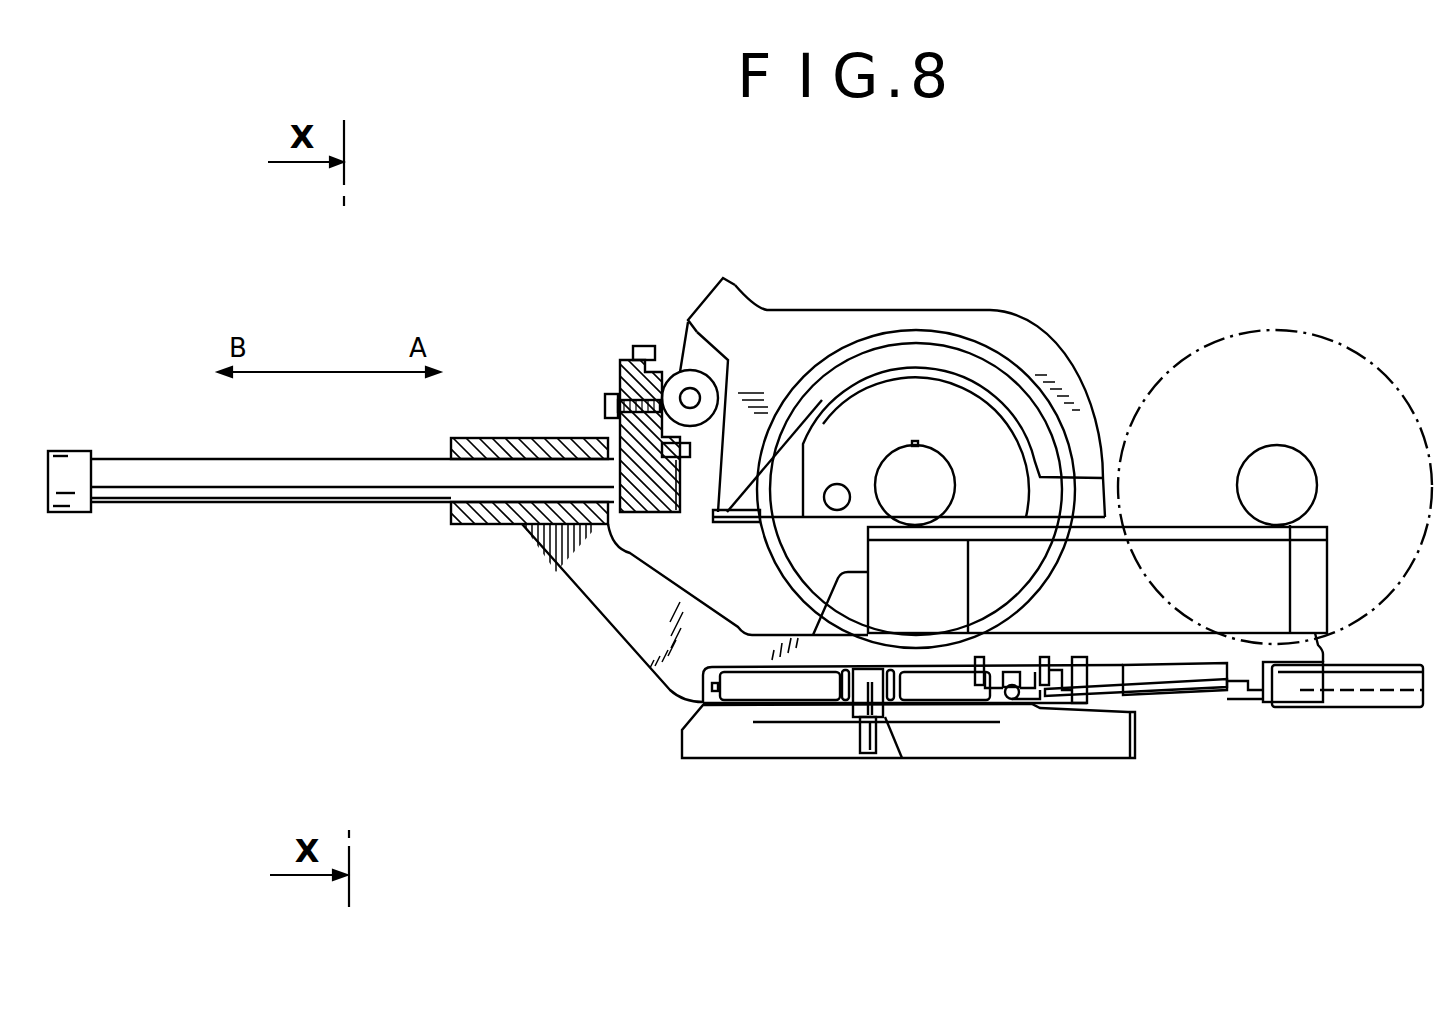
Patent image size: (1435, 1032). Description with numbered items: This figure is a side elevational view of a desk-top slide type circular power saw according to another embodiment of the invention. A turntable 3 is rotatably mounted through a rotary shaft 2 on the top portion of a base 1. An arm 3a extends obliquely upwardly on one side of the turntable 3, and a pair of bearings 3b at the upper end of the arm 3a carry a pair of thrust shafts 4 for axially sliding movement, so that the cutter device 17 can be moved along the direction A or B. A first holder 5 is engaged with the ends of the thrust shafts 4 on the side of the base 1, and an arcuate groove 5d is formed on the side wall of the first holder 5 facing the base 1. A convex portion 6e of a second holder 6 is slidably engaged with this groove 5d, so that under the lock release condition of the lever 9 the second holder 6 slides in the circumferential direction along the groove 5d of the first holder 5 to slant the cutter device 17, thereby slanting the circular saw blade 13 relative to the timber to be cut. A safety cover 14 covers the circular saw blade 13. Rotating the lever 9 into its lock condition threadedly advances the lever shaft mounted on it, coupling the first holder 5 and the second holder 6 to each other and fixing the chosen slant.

The base 1 is at (722, 742).
The rotary shaft 2 is at (887, 717).
The turntable 3 is at (652, 653).
The arm 3a is at (602, 602).
The bearings 3b is at (510, 438).
The thrust shafts 4 is at (278, 490).
The first holder 5 is at (607, 355).
The arcuate groove 5d is at (532, 543).
The second holder 6 is at (672, 372).
The convex portion 6e is at (727, 288).
The lever 9 is at (605, 403).
The circular saw blade 13 is at (1290, 355).
The safety cover 14 is at (1005, 328).
The cutter device 17 is at (948, 270).